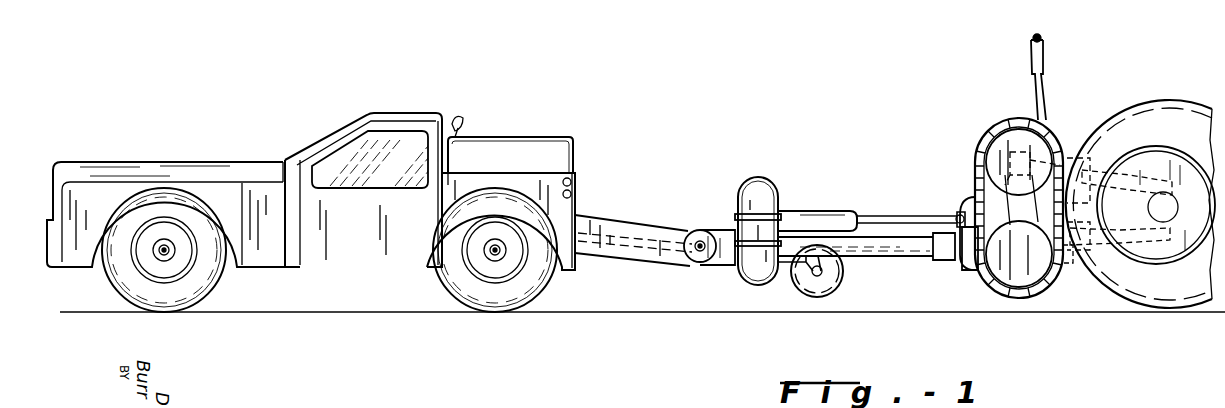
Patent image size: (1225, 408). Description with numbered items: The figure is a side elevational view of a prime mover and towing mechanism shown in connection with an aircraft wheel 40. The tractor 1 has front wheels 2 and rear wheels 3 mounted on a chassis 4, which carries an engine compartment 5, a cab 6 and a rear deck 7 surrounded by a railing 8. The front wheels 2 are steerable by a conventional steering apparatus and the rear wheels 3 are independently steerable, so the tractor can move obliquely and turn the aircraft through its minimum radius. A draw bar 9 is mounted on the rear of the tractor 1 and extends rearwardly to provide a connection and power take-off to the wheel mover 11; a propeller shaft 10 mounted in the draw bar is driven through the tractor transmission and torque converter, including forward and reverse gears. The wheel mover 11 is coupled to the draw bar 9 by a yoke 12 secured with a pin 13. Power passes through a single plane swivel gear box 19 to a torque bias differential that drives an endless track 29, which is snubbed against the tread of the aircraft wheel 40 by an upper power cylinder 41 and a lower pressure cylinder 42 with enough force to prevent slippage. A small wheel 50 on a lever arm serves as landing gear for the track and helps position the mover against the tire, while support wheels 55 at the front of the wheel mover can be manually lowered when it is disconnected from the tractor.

The tractor 1 is at (281, 150).
The front wheels 2 is at (217, 263).
The rear wheels 3 is at (450, 275).
The chassis 4 is at (330, 253).
The engine compartment 5 is at (163, 170).
The cab 6 is at (400, 128).
The rear deck 7 is at (553, 181).
The railing 8 is at (556, 137).
The draw bar 9 is at (620, 219).
The propeller shaft 10 is at (637, 243).
The wheel mover 11 is at (786, 195).
The yoke 12 is at (713, 237).
The pin 13 is at (700, 254).
The single plane swivel gear box 19 is at (758, 178).
The endless track 29 is at (993, 130).
The aircraft wheel 40 is at (1160, 105).
The upper power cylinder 41 is at (1053, 125).
The lower pressure cylinder 42 is at (1113, 208).
The small wheel 50 is at (1066, 282).
The landing or support wheels 55 is at (843, 272).